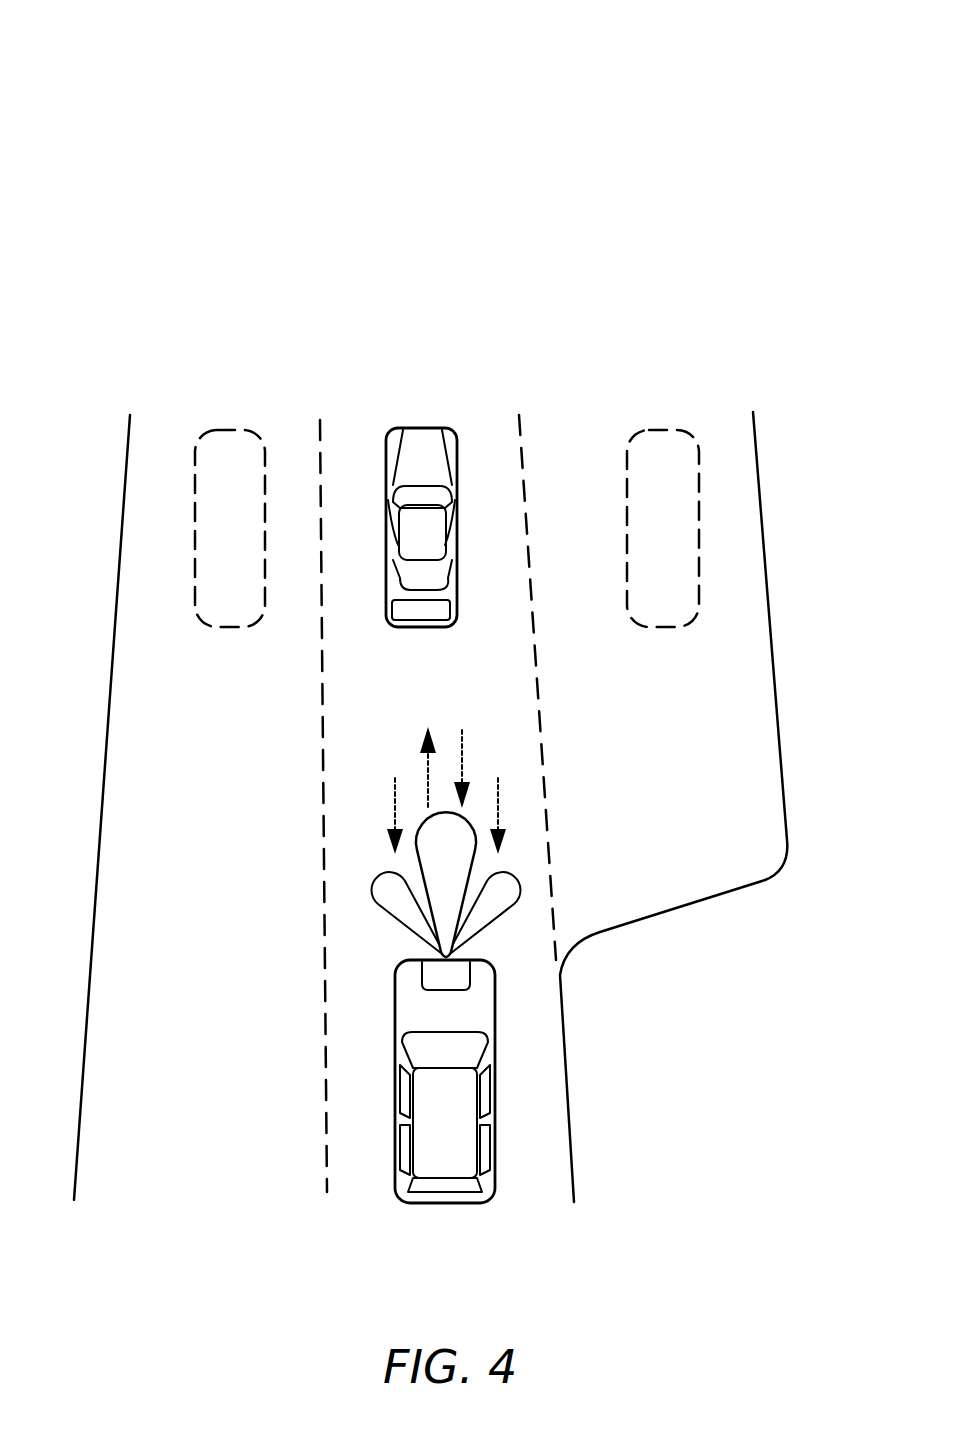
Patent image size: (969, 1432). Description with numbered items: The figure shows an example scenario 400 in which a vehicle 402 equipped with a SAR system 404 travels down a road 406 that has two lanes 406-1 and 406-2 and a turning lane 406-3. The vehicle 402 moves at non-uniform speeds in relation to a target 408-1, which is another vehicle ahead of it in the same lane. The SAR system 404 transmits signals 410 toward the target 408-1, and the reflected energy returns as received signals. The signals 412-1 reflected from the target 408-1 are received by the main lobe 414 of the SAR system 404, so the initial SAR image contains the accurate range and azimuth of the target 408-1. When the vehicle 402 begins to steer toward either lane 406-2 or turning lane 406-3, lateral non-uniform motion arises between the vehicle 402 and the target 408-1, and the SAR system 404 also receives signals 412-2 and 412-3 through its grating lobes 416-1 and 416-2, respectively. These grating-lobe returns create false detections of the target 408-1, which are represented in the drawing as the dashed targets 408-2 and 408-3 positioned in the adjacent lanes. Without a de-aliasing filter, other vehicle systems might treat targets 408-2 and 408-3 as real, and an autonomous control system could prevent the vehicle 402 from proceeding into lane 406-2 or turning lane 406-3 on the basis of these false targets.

The example scenario 400 is at (118, 56).
The vehicle 402 is at (447, 1203).
The SAR system 404 is at (472, 975).
The road 406 is at (618, 1082).
The lane 406-1 is at (372, 302).
The lane 406-2 is at (200, 302).
The turning lane 406-3 is at (605, 302).
The target 408-1 is at (422, 428).
The false target 408-2 is at (230, 430).
The false target 408-3 is at (663, 430).
The transmitted signals 410 is at (427, 768).
The received signals 412-1 is at (462, 768).
The received signals 412-2 is at (395, 818).
The received signals 412-3 is at (499, 817).
The main lobe 414 is at (415, 858).
The grating lobe 416-1 is at (383, 910).
The grating lobe 416-2 is at (522, 890).